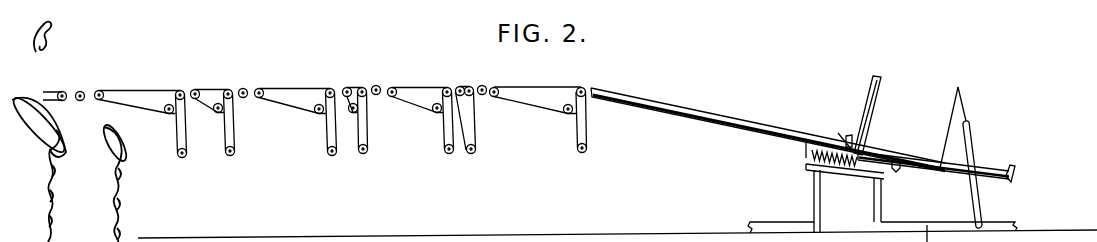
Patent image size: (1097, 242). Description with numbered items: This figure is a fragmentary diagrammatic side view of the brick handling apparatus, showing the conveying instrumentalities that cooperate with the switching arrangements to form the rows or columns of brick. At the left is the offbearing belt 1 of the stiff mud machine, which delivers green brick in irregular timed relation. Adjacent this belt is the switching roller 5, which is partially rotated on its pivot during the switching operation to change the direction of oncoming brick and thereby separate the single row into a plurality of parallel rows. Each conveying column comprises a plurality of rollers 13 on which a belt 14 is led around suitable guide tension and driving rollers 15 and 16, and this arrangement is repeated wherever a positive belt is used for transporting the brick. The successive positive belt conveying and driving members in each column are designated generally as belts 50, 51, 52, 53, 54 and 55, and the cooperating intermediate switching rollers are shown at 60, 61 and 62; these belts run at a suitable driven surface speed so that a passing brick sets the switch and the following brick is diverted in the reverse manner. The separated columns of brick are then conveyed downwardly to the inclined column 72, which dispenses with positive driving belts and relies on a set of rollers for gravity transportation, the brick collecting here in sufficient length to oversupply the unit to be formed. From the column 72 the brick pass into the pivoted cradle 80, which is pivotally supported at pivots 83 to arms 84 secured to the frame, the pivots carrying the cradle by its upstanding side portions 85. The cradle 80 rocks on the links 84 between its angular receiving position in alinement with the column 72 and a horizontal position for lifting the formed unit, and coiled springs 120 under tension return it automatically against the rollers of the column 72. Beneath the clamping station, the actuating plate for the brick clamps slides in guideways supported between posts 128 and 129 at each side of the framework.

The offbearing belt 1 is at (52, 90).
The switching roller 5 is at (82, 89).
The rollers 13 is at (100, 89).
The belt 14 is at (134, 89).
The guide tension roller 15 is at (166, 112).
The driving roller 16 is at (175, 186).
The belt 50 is at (223, 89).
The belt 51 is at (297, 88).
The belt 52 is at (353, 88).
The belt 53 is at (421, 101).
The belt 54 is at (466, 87).
The belt 55 is at (567, 85).
The intermediate switching roller 60 is at (245, 88).
The intermediate switching roller 61 is at (378, 86).
The intermediate switching roller 62 is at (487, 85).
The inclined column 72 is at (697, 110).
The pivoted cradle 80 is at (924, 163).
The pivot 83 is at (971, 123).
The arms 84 is at (973, 155).
The upstanding side portion 85 is at (962, 100).
The coiled spring 120 is at (817, 161).
The post 128 is at (878, 188).
The post 129 is at (818, 200).